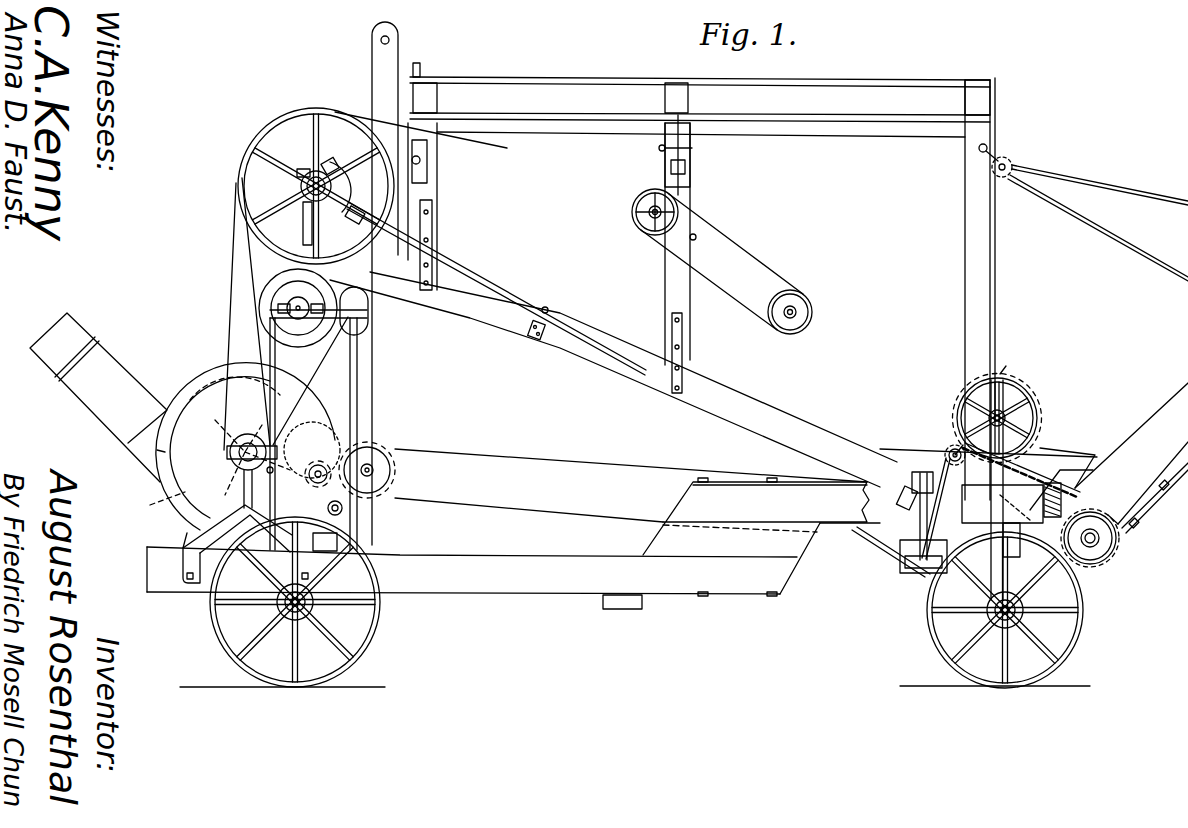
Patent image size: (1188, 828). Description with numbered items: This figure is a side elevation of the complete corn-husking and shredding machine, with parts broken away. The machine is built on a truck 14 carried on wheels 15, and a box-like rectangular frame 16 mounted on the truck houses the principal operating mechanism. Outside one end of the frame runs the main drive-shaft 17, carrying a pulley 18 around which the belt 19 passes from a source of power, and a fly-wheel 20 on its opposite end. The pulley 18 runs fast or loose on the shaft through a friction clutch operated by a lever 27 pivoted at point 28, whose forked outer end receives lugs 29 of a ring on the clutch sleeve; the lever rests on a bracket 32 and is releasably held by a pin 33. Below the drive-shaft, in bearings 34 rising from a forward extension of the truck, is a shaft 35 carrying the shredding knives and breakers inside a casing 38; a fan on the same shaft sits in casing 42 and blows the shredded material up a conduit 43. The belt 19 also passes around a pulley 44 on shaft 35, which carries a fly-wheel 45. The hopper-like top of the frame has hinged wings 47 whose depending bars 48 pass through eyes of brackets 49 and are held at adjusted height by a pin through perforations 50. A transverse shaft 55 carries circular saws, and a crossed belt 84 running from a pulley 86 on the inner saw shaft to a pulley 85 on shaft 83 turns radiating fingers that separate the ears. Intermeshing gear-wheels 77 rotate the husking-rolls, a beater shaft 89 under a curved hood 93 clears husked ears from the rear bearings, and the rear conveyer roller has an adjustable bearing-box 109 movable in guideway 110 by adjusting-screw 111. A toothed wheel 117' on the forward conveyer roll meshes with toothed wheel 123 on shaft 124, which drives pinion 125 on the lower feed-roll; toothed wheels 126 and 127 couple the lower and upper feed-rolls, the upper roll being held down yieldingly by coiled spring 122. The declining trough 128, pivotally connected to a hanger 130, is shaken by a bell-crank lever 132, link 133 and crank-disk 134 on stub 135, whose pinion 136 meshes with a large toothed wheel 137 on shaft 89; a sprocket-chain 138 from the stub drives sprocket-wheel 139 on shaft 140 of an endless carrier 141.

The truck 14 is at (546, 600).
The wheels 15 is at (380, 625).
The frame 16 is at (950, 296).
The main drive-shaft 17 is at (311, 180).
The pulley 18 is at (342, 118).
The belt 19 is at (480, 150).
The fly-wheel 20 is at (240, 160).
The lever 27 is at (512, 296).
The pivot point 28 is at (350, 224).
The lugs 29 is at (330, 170).
The bracket 32 is at (537, 340).
The pin 33 is at (548, 308).
The bearings 34 is at (190, 543).
The shaft 35 is at (248, 442).
The casing 38 is at (200, 420).
The casing 42 is at (152, 500).
The conduit 43 is at (95, 410).
The pulley 44 is at (227, 454).
The fly-wheel 45 is at (157, 445).
The wings 47 is at (885, 78).
The bars 48 is at (688, 140).
The bracket 49 is at (690, 165).
The perforations 50 is at (665, 148).
The transverse shaft 55 is at (647, 197).
The intermeshing gear-wheels 77 is at (1045, 483).
The shaft 83 is at (808, 302).
The crossed belt 84 is at (712, 244).
The pulley 85 is at (803, 322).
The pulley 86 is at (636, 220).
The transverse shaft 89 is at (975, 398).
The curved hood 93 is at (1030, 400).
The adjustable bearing-box 109 is at (855, 558).
The guideway 110 is at (890, 505).
The adjusting-screw 111 is at (888, 470).
The toothed wheel 117' is at (386, 470).
The coiled spring 122 is at (322, 388).
The toothed wheel 123 is at (345, 520).
The shaft 124 is at (325, 544).
The pinion 125 is at (325, 466).
The toothed wheel 126 is at (308, 463).
The toothed wheel 127 is at (287, 457).
The trough 128 is at (918, 570).
The bracket 130 is at (909, 491).
The bell-crank lever 132 is at (945, 550).
The link 133 is at (944, 462).
The crank-disk 134 is at (955, 445).
The stub 135 is at (1021, 470).
The pinion 136 is at (947, 448).
The large toothed wheel 137 is at (1002, 380).
The sprocket-chain 138 is at (1098, 480).
The sprocket-wheel 139 is at (1092, 565).
The shaft 140 is at (1118, 545).
The endless carrier 141 is at (1140, 510).